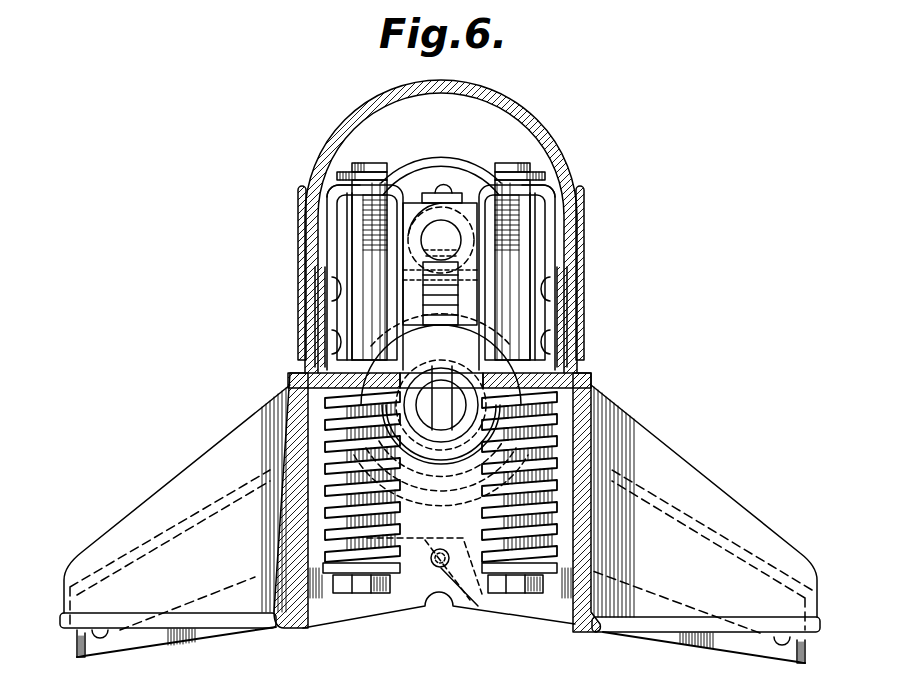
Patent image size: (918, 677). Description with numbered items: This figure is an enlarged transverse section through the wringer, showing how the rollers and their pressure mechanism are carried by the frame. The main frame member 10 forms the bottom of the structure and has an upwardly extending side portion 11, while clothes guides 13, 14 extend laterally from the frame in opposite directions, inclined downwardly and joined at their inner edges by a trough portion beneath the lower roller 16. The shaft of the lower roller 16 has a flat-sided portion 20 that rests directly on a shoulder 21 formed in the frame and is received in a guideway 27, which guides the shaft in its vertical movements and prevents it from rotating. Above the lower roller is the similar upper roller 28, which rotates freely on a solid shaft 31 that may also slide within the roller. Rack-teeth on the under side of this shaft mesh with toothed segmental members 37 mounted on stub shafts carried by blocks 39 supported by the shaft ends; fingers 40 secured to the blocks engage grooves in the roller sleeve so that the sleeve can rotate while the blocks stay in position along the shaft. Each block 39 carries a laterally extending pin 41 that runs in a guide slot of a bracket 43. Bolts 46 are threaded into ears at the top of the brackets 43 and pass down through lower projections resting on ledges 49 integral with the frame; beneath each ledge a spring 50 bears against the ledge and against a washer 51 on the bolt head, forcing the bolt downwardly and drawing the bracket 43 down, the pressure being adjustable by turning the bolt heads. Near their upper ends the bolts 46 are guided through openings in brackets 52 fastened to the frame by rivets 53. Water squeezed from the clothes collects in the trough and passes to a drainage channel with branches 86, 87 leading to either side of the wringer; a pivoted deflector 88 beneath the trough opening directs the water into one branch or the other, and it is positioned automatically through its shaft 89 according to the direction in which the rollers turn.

The main frame member 10 is at (205, 622).
The side portion 11 is at (300, 527).
The clothes guide 13 is at (211, 512).
The clothes guide 14 is at (655, 507).
The lower roller 16 is at (402, 330).
The flat-sided portion 20 is at (438, 417).
The shoulder 21 is at (447, 420).
The guideway 27 is at (447, 378).
The upper roller 28 is at (446, 157).
The solid shaft 31 is at (441, 240).
The segmental member 37 is at (443, 300).
The block 39 is at (421, 222).
The finger 40 is at (454, 196).
The pin 41 is at (494, 237).
The bracket 43 is at (465, 187).
The bolt 46 is at (533, 250).
The ledge 49 is at (586, 378).
The spring 50 is at (548, 434).
The washer 51 is at (505, 577).
The bracket 52 is at (556, 232).
The rivet 53 is at (565, 347).
The branch 86 is at (350, 612).
The branch 87 is at (565, 612).
The deflector 88 is at (434, 589).
The shaft 89 is at (446, 567).